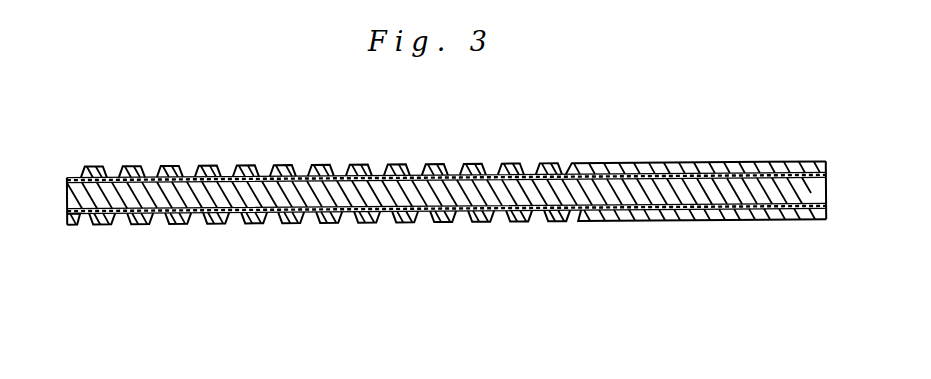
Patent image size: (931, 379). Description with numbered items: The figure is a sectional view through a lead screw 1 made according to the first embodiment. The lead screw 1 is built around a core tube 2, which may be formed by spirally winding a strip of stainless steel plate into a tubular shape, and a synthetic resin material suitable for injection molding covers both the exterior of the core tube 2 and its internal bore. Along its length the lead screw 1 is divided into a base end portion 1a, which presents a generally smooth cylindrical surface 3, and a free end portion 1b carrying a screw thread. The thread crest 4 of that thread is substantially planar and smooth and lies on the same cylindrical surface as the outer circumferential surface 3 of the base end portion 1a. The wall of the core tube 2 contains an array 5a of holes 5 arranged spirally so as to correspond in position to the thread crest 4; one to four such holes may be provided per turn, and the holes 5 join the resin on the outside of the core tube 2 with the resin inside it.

The lead screw 1 is at (511, 117).
The base end portion 1a is at (813, 273).
The free end portion 1b is at (573, 287).
The core tube 2 is at (746, 171).
The smooth cylindrical surface 3 is at (680, 215).
The thread crest 4 is at (164, 166).
The holes 5 is at (395, 174).
The array of holes 5a is at (446, 208).